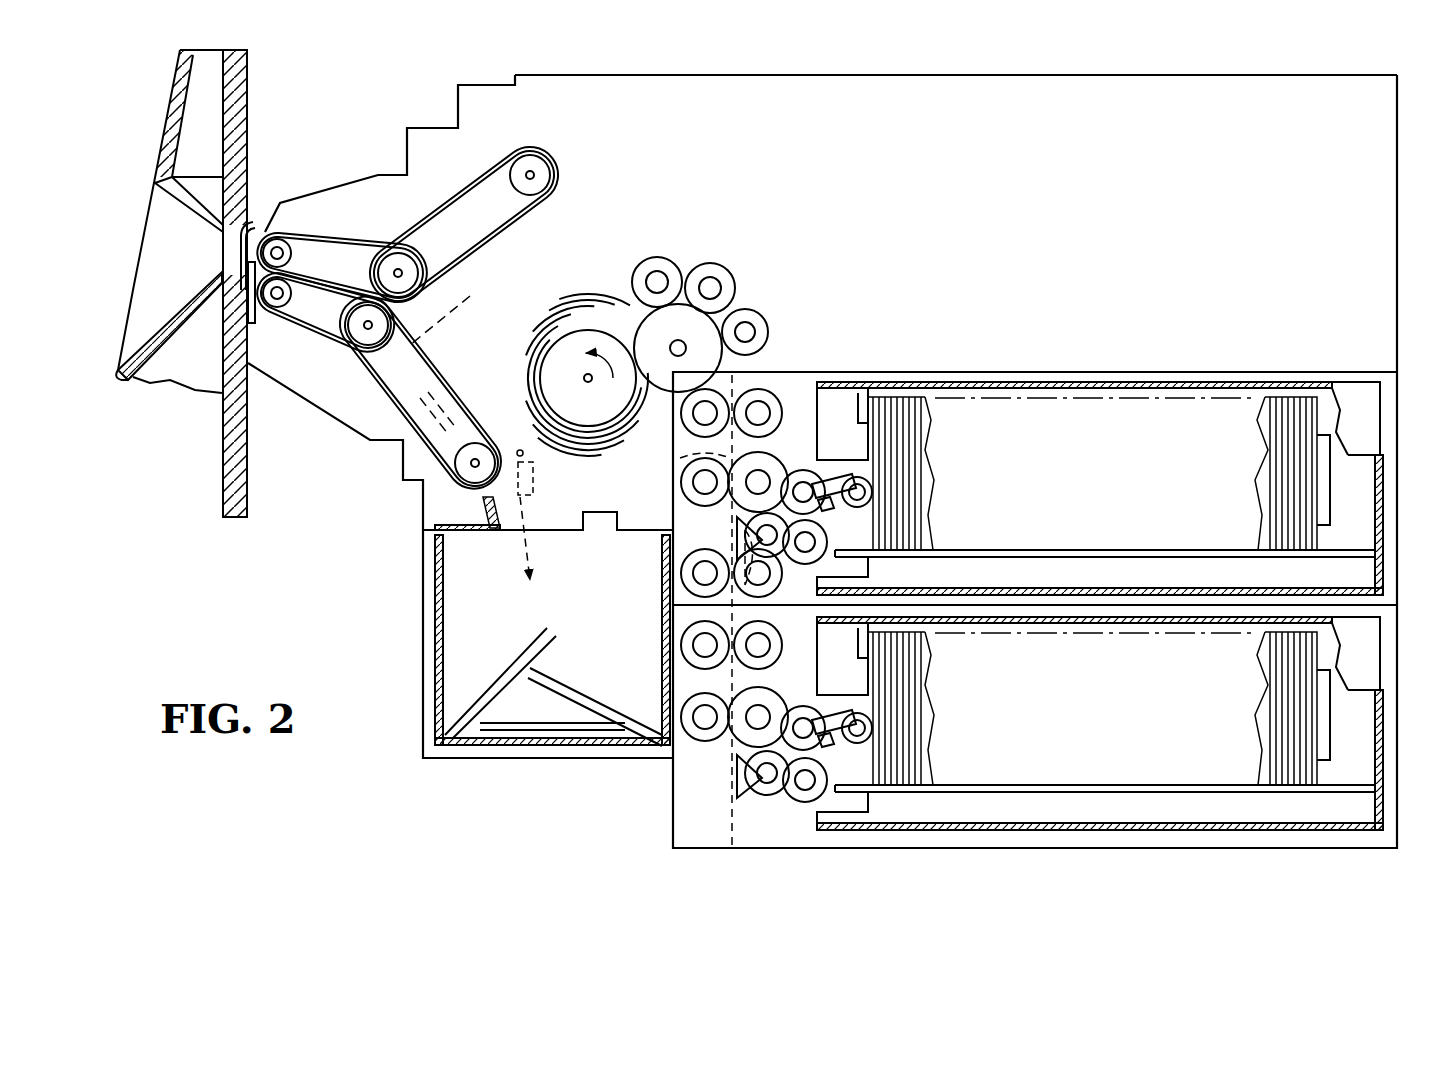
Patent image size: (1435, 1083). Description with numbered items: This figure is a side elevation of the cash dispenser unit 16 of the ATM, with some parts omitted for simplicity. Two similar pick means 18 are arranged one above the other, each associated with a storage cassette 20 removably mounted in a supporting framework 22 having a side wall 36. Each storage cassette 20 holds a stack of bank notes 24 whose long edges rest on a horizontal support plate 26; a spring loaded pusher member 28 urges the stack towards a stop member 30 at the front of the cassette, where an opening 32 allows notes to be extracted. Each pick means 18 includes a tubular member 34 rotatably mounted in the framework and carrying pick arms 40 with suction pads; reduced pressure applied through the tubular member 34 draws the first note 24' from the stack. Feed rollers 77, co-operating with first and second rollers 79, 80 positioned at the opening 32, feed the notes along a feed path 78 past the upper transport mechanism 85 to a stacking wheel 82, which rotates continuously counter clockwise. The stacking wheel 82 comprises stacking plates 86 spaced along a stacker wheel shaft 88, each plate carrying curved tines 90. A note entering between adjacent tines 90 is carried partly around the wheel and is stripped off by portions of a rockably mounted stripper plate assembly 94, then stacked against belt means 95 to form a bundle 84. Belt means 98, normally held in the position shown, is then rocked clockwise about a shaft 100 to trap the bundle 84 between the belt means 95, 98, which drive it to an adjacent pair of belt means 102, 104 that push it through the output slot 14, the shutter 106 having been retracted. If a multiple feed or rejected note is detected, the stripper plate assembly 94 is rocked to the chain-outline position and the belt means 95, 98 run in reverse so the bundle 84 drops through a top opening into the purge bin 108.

The output slot 14 is at (215, 270).
The cash dispenser unit 16 is at (805, 72).
The pick means 18 is at (828, 478).
The storage cassette 20 is at (1130, 371).
The supporting framework 22 is at (1400, 115).
The bank notes 24 is at (1092, 560).
The first note 24' is at (926, 640).
The horizontal support plate 26 is at (1135, 550).
The spring loaded pusher member 28 is at (1322, 497).
The stop member 30 is at (866, 392).
The opening 32 is at (848, 770).
The tubular member 34 is at (878, 680).
The side wall 36 is at (995, 372).
The pick arm 40 is at (868, 468).
The feed rollers 77 is at (716, 396).
The feed path 78 is at (673, 462).
The first rollers 79 is at (805, 568).
The second rollers 80 is at (803, 476).
The stacking wheel 82 is at (592, 285).
The bundle of notes 84 is at (457, 352).
The upper transport mechanism 85 is at (686, 258).
The stacking plates 86 is at (555, 352).
The stacker wheel shaft 88 is at (590, 380).
The curved tines 90 is at (508, 372).
The stripper plate assembly 94 is at (495, 437).
The belt means 95 is at (375, 387).
The belt means 98 is at (480, 178).
The shaft 100 is at (398, 268).
The belt means 102 is at (325, 335).
The belt means 104 is at (350, 242).
The shutter 106 is at (258, 235).
The purge bin 108 is at (435, 597).